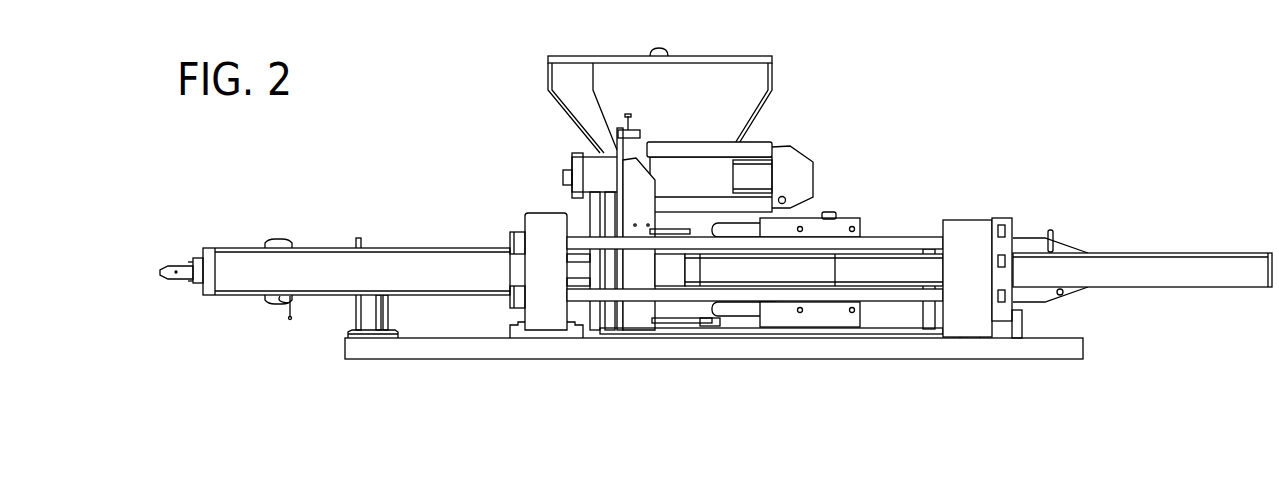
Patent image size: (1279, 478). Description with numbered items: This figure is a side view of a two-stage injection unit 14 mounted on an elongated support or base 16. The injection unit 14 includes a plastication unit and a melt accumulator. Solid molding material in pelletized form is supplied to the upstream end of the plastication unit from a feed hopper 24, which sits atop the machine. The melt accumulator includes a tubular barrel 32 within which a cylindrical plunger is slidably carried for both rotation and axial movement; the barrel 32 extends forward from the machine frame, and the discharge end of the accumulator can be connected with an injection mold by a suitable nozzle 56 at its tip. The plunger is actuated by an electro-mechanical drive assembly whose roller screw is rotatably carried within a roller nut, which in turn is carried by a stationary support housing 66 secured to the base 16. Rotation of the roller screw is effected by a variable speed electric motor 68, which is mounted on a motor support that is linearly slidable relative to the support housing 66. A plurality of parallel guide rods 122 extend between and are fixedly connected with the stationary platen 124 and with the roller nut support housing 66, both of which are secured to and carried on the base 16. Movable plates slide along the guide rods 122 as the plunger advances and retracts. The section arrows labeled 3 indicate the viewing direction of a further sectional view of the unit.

The section line for FIG. 3 is at (1278, 31).
The two-stage injection unit 14 is at (453, 123).
The base 16 is at (1072, 348).
The feed hopper 24 is at (681, 108).
The tubular barrel 32 is at (308, 258).
The nozzle 56 is at (172, 262).
The stationary support housing 66 is at (967, 240).
The variable speed electric motor 68 is at (797, 158).
The guide rods 122 is at (876, 244).
The stationary platen 124 is at (550, 228).